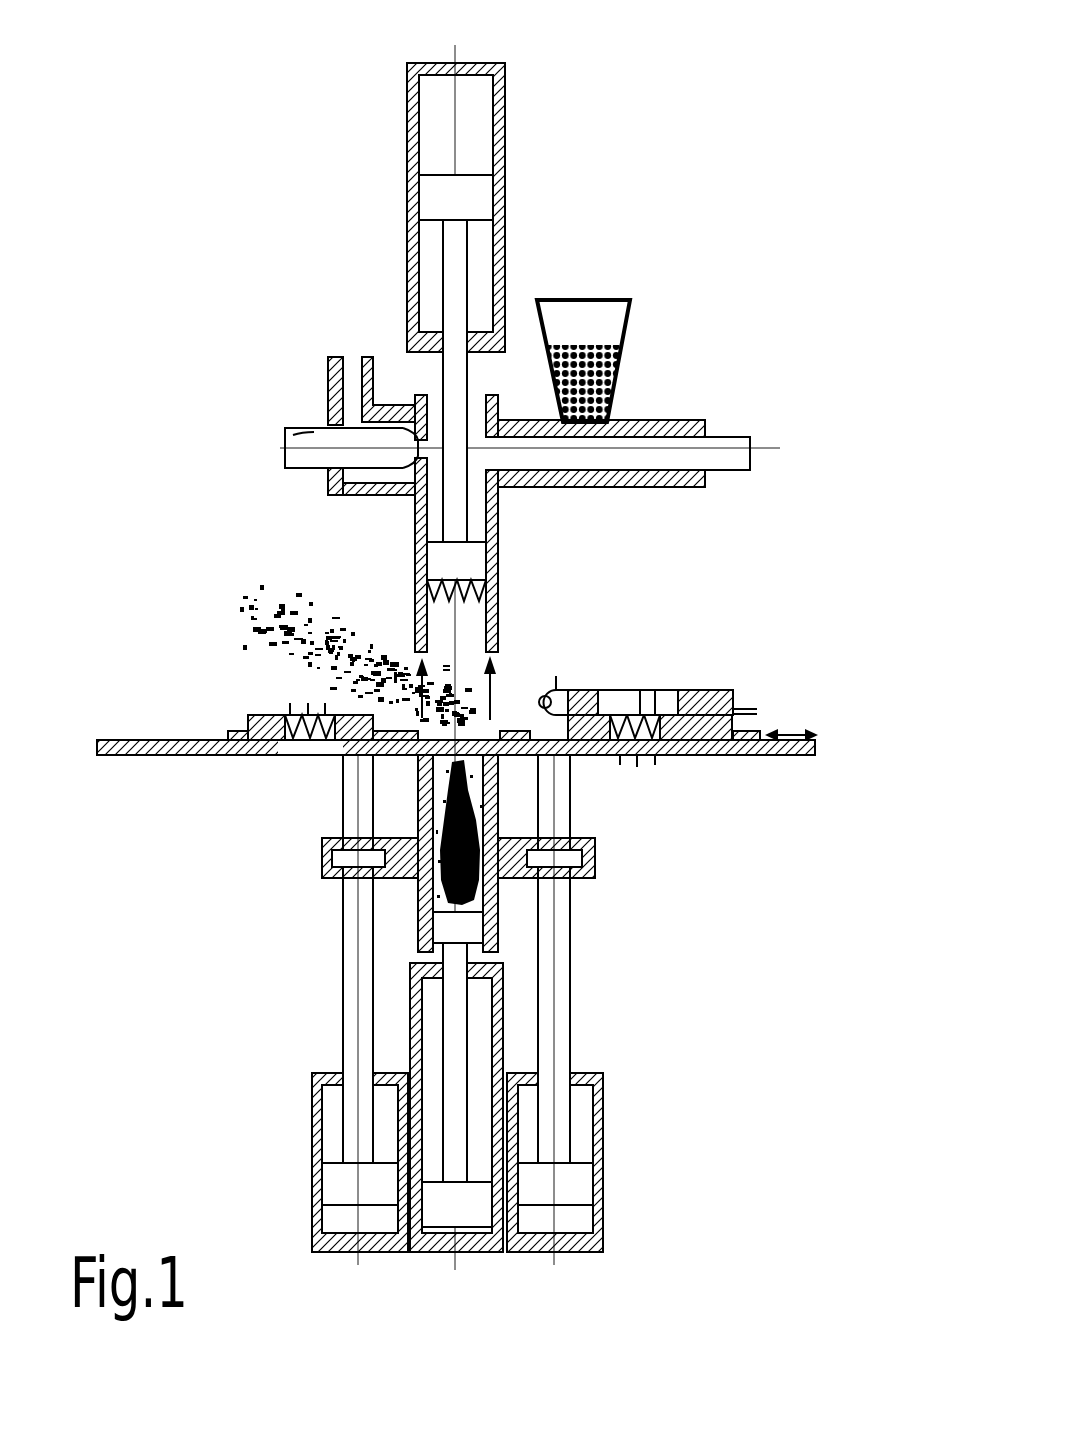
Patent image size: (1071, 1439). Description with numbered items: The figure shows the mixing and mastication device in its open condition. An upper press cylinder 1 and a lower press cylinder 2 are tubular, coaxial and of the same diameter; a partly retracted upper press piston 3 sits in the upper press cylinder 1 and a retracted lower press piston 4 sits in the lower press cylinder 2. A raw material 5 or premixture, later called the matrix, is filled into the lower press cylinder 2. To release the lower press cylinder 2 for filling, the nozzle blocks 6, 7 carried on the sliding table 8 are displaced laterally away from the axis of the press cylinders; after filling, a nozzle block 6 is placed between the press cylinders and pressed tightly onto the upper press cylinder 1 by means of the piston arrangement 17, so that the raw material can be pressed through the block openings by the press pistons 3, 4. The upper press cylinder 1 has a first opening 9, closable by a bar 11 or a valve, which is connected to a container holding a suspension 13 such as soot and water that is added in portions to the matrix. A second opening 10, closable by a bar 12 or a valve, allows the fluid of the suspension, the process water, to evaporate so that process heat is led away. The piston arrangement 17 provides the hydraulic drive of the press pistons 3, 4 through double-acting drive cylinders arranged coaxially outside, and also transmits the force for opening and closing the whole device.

The upper press cylinder 1 is at (470, 623).
The lower press cylinder 2 is at (477, 776).
The upper press piston 3 is at (470, 557).
The lower press piston 4 is at (468, 927).
The raw material 5 is at (255, 612).
The nozzle block 6 is at (255, 722).
The nozzle block 7 is at (758, 718).
The sliding table 8 is at (230, 735).
The first opening 9 is at (498, 472).
The second opening 10 is at (420, 447).
The bar 11 is at (552, 452).
The bar 12 is at (300, 437).
The suspension 13 is at (632, 355).
The piston arrangement 17 is at (505, 47).